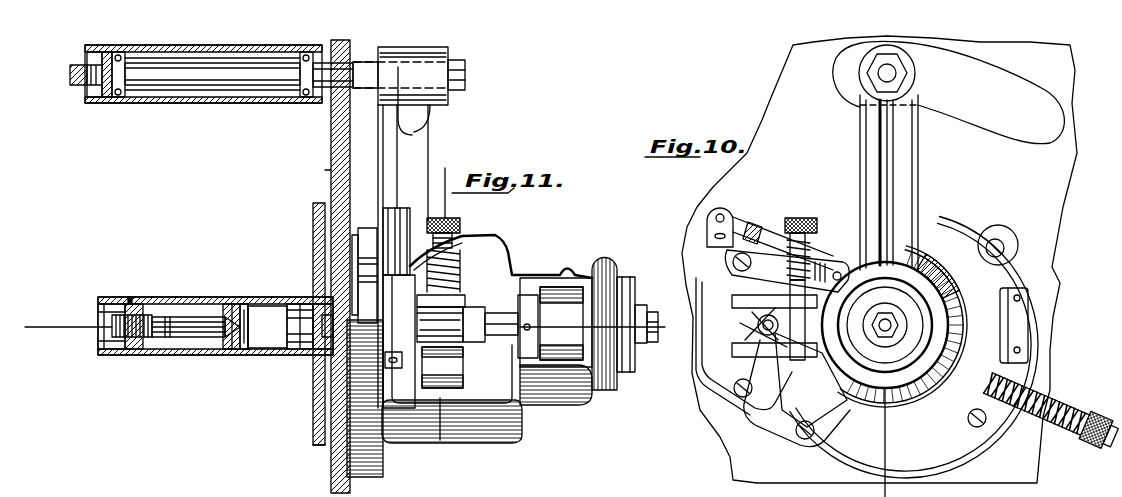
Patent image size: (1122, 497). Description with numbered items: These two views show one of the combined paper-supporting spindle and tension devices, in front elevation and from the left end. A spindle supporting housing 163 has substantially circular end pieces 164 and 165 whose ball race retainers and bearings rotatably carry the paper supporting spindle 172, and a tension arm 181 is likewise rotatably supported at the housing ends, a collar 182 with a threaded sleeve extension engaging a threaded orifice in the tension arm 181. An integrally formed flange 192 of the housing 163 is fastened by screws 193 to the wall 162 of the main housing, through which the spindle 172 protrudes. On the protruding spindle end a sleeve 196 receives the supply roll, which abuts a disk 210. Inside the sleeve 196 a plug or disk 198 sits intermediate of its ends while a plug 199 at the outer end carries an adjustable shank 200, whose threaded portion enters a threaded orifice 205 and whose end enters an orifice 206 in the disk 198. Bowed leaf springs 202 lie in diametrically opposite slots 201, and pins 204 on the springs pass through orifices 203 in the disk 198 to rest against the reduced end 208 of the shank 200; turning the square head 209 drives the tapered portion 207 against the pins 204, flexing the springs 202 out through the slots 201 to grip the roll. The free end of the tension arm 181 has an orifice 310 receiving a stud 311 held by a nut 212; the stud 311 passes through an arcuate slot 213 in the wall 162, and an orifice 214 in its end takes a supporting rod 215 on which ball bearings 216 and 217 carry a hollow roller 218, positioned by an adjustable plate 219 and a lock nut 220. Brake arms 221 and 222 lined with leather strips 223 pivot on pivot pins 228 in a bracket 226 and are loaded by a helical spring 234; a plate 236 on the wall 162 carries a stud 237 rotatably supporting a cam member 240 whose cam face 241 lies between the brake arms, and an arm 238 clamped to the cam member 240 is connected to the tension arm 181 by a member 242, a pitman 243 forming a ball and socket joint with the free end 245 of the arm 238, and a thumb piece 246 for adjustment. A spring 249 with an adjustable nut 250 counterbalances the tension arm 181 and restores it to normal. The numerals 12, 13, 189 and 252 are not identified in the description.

In FIG. 11, the shaft 12 is at (446, 305).
In FIG. 10, the pivot bolt 13 is at (887, 70).
In FIG. 11, the wall of the housing 162 is at (330, 170).
In FIG. 11, the spindle supporting housing 163 is at (572, 392).
In FIG. 10, the spindle supporting housing 163 is at (967, 268).
In FIG. 11, the end piece 164 is at (332, 250).
In FIG. 11, the end piece 165 is at (606, 264).
In FIG. 11, the paper supporting spindle 172 is at (536, 396).
In FIG. 11, the tension arm 181 is at (415, 157).
In FIG. 10, the tension arm 181 is at (915, 178).
In FIG. 11, the collar 182 is at (520, 305).
In FIG. 11, the shaft end nut 189 is at (650, 345).
In FIG. 10, the flange 192 is at (955, 447).
In FIG. 10, the screws 193 is at (805, 440).
In FIG. 11, the sleeve 196 is at (190, 297).
In FIG. 11, the plug or disk 198 is at (230, 345).
In FIG. 11, the plug 199 is at (123, 356).
In FIG. 11, the adjustable shank 200 is at (101, 356).
In FIG. 11, the slots 201 is at (284, 300).
In FIG. 11, the bowed leaf springs 202 is at (246, 290).
In FIG. 11, the orifices 203 is at (243, 326).
In FIG. 11, the pins 204 is at (306, 298).
In FIG. 11, the threaded orifice 205 is at (124, 297).
In FIG. 11, the orifice 206 is at (258, 324).
In FIG. 11, the tapered portion 207 is at (202, 345).
In FIG. 11, the reduced end 208 is at (212, 356).
In FIG. 11, the square head 209 is at (100, 328).
In FIG. 11, the disk 210 is at (313, 210).
In FIG. 11, the nut 212 is at (466, 75).
In FIG. 10, the arcuate slot 213 is at (1038, 140).
In FIG. 11, the orifice 214 is at (331, 125).
In FIG. 11, the supporting rod 215 is at (250, 76).
In FIG. 11, the ball bearing 216 is at (123, 98).
In FIG. 11, the ball bearing 217 is at (305, 98).
In FIG. 11, the sleeve or hollow roller 218 is at (188, 104).
In FIG. 11, the adjustable plate 219 is at (98, 104).
In FIG. 11, the lock nut 220 is at (70, 86).
In FIG. 11, the brake arm 221 is at (462, 300).
In FIG. 11, the brake arm 222 is at (462, 352).
In FIG. 11, the strips of leather 223 is at (467, 489).
In FIG. 10, the bracket 226 is at (1022, 325).
In FIG. 10, the pivot pins 228 is at (1020, 298).
In FIG. 11, the helical spring 234 is at (449, 300).
In FIG. 11, the plate 236 is at (312, 447).
In FIG. 10, the stud 237 is at (778, 345).
In FIG. 11, the arm 238 is at (404, 213).
In FIG. 10, the arm 238 is at (706, 264).
In FIG. 11, the cam member 240 is at (452, 322).
In FIG. 10, the cam member 240 is at (786, 352).
In FIG. 10, the cam face 241 is at (790, 292).
In FIG. 10, the member 242 is at (822, 262).
In FIG. 10, the pitman 243 is at (768, 234).
In FIG. 10, the free end 245 is at (724, 206).
In FIG. 10, the thumb piece 246 is at (751, 224).
In FIG. 10, the spring 249 is at (1072, 398).
In FIG. 10, the adjustable nut 250 is at (1098, 442).
In FIG. 10, the plate 252 is at (741, 489).
In FIG. 11, the orifice 310 is at (450, 50).
In FIG. 11, the stud 311 is at (430, 135).